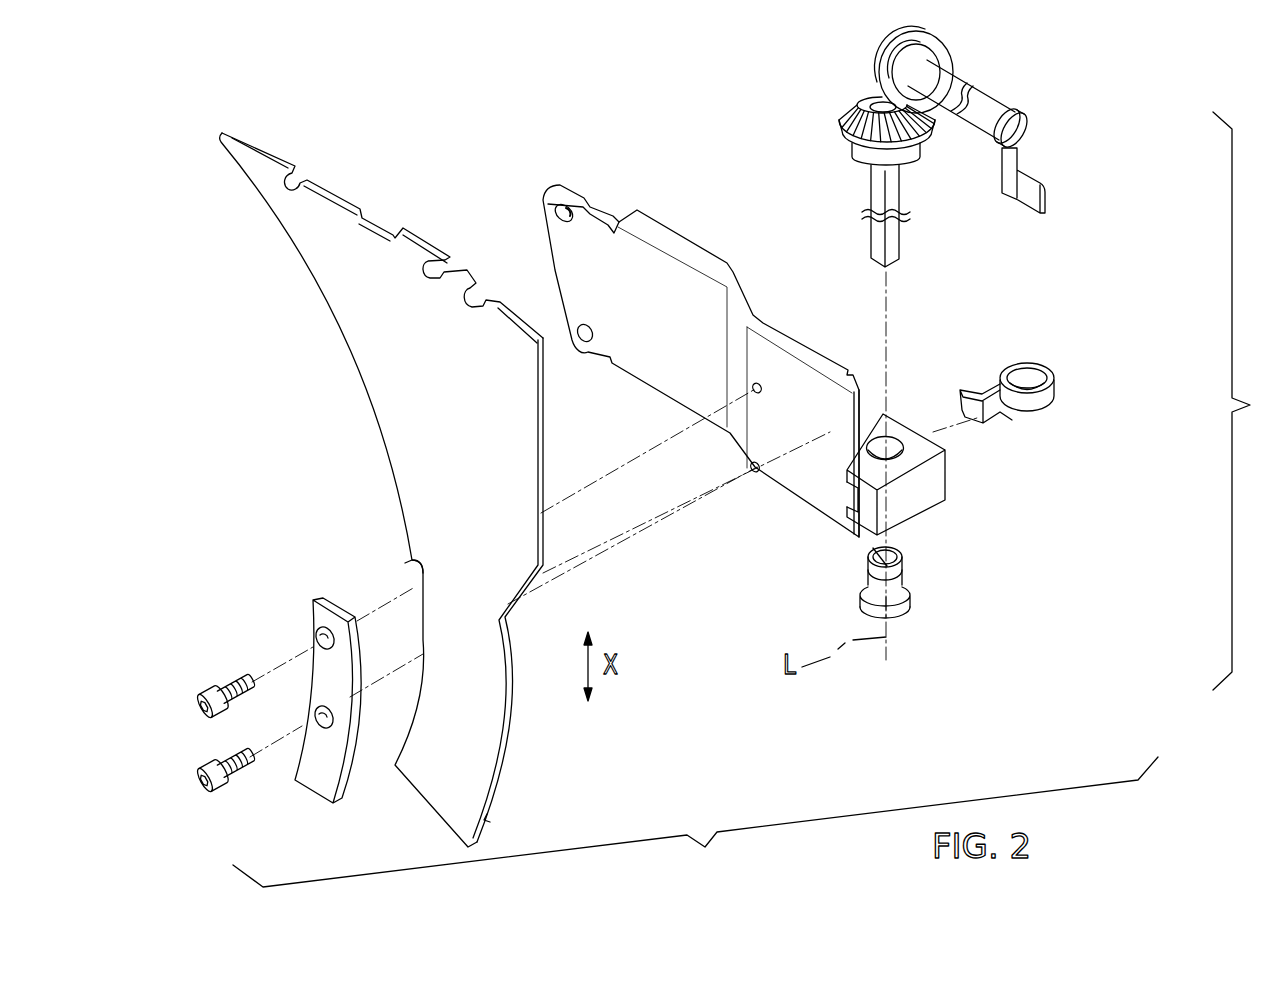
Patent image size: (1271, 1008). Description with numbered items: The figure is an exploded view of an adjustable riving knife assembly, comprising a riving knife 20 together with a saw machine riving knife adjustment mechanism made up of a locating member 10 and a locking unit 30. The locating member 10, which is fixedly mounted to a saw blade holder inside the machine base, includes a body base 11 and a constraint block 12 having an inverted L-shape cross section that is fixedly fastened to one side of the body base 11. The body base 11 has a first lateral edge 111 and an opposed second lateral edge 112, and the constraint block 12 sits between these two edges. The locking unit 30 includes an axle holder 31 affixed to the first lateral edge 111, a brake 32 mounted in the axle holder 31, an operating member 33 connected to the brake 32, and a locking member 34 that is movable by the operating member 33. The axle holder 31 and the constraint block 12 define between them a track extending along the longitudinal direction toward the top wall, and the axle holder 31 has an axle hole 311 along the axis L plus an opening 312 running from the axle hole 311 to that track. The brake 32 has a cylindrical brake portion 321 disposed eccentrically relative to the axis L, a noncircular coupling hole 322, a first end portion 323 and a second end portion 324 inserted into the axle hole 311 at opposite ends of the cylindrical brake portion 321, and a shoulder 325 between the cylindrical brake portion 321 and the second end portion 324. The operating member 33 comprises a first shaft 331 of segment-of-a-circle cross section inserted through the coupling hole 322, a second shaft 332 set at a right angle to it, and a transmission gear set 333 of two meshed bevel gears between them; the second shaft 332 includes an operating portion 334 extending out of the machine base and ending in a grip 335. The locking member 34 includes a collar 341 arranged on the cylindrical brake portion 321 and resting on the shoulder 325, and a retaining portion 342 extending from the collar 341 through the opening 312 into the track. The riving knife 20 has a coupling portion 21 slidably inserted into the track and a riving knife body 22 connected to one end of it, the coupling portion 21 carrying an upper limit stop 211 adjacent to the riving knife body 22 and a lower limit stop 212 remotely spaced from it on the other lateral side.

The locating member 10 is at (742, 255).
The body base 11 is at (773, 337).
The first lateral edge 111 is at (873, 405).
The second lateral edge 112 is at (550, 252).
The constraint block 12 is at (313, 613).
The riving knife 20 is at (524, 712).
The coupling portion 21 is at (490, 752).
The upper limit stop 211 is at (412, 575).
The lower limit stop 212 is at (487, 817).
The riving knife body 22 is at (297, 243).
The locking unit 30 is at (948, 622).
The axle holder 31 is at (935, 480).
The axle hole 311 is at (892, 443).
The opening 312 is at (847, 493).
The brake 32 is at (912, 592).
The cylindrical brake portion 321 is at (898, 580).
The noncircular coupling hole 322 is at (888, 563).
The first end portion 323 is at (873, 563).
The second end portion 324 is at (890, 612).
The shoulder 325 is at (862, 590).
The operating member 33 is at (997, 88).
The first shaft 331 is at (878, 200).
The second shaft 332 is at (943, 116).
The transmission gear set 333 is at (855, 99).
The operating portion 334 is at (1010, 108).
The grip 335 is at (1047, 190).
The locking member 34 is at (1057, 397).
The collar 341 is at (1037, 363).
The retaining portion 342 is at (978, 393).